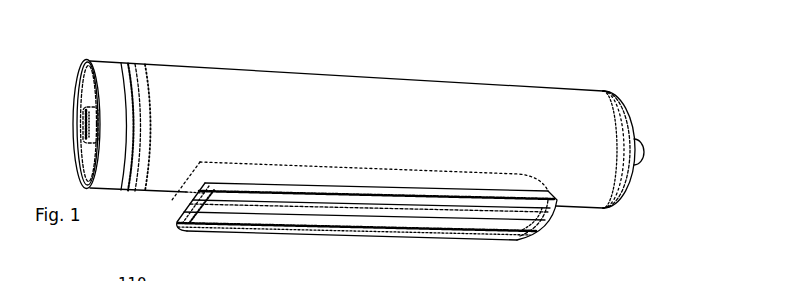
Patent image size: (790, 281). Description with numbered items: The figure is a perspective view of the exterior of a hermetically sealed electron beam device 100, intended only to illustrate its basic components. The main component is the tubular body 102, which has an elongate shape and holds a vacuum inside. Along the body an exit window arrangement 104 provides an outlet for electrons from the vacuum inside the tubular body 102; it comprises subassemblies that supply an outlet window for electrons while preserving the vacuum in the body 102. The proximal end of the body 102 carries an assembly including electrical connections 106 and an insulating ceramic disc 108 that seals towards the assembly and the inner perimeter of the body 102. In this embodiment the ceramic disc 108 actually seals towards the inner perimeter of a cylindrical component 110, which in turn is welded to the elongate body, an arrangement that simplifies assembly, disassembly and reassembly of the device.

The electron beam device 100 is at (432, 79).
The tubular body 102 is at (282, 70).
The exit window arrangement 104 is at (405, 227).
The electrical connections 106 is at (82, 125).
The insulating ceramic disc 108 is at (96, 82).
The cylindrical component 110 is at (107, 62).